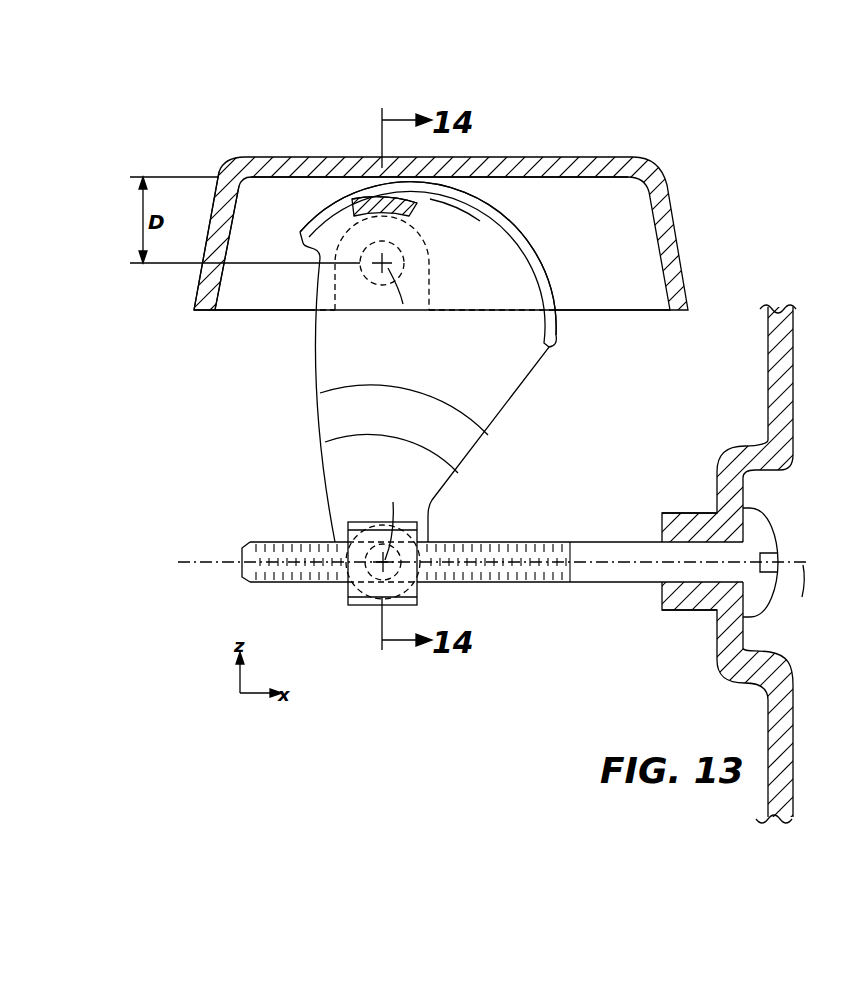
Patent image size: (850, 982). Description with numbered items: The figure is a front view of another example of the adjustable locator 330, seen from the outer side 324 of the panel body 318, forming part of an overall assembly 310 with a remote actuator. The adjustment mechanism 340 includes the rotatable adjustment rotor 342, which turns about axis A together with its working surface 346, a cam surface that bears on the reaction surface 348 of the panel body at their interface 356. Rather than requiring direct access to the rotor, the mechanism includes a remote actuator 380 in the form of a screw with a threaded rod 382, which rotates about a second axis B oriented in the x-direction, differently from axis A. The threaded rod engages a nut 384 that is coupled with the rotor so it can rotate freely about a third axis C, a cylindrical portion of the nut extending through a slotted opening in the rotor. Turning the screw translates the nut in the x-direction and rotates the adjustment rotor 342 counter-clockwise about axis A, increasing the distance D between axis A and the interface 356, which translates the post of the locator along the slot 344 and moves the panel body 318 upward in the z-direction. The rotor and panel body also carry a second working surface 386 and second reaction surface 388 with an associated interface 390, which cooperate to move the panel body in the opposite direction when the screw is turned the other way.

The mounting assembly 310 is at (430, 210).
The panel body 318 is at (767, 393).
The outer side 324 is at (672, 247).
The adjustable locator 330 is at (522, 244).
The adjustment mechanism 340 is at (399, 320).
The adjustment rotor 342 is at (502, 380).
The slot 344 is at (421, 273).
The working surface 346 is at (474, 200).
The reaction surface 348 is at (276, 178).
The interface 356 is at (366, 176).
The remote actuator 380 is at (493, 560).
The threaded rod 382 is at (290, 540).
The nut 384 is at (367, 597).
The second working surface 386 is at (454, 214).
The second reaction surface 388 is at (350, 200).
The interface 390 is at (395, 192).